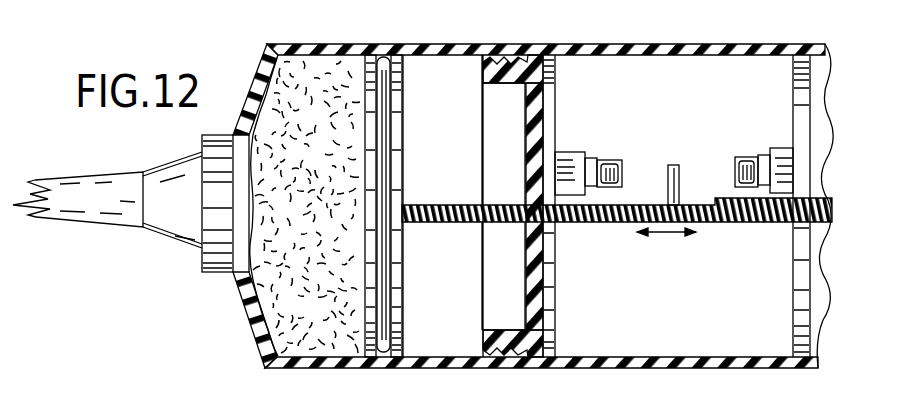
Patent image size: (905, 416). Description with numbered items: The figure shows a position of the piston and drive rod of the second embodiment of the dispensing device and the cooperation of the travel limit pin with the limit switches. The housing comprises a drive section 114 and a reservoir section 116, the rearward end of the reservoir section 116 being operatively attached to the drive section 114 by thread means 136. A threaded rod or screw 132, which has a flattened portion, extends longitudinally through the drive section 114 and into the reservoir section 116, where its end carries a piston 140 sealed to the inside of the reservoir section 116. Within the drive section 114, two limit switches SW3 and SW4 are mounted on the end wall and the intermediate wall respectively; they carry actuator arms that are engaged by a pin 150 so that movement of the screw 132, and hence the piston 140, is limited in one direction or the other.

The drive section 114 is at (650, 44).
The reservoir section 116 is at (375, 44).
The threaded rod or screw 132 is at (606, 223).
The thread means 136 is at (517, 46).
The piston 140 is at (394, 152).
The pin 150 is at (682, 181).
The switch SW3 is at (575, 155).
The switch SW4 is at (784, 148).